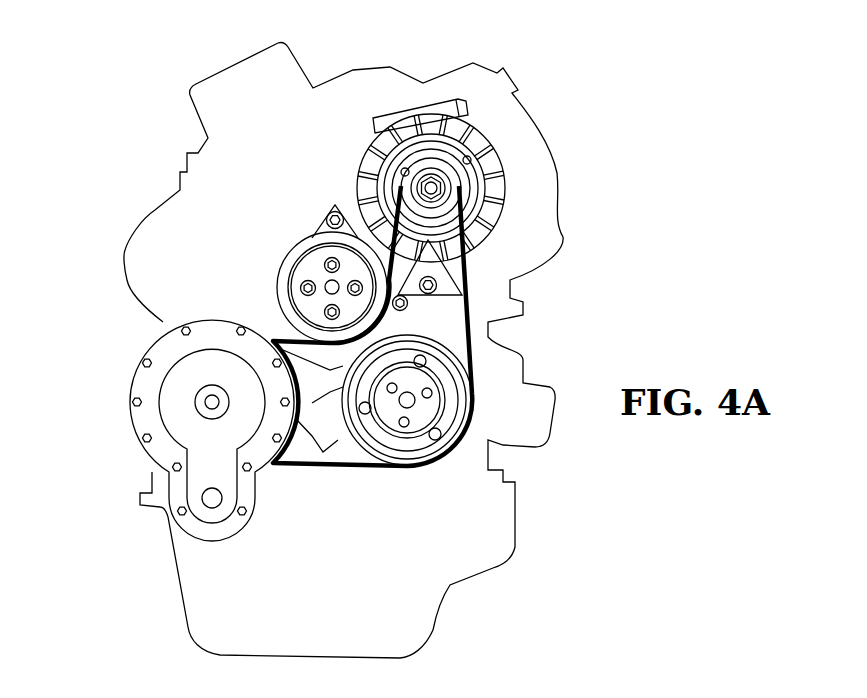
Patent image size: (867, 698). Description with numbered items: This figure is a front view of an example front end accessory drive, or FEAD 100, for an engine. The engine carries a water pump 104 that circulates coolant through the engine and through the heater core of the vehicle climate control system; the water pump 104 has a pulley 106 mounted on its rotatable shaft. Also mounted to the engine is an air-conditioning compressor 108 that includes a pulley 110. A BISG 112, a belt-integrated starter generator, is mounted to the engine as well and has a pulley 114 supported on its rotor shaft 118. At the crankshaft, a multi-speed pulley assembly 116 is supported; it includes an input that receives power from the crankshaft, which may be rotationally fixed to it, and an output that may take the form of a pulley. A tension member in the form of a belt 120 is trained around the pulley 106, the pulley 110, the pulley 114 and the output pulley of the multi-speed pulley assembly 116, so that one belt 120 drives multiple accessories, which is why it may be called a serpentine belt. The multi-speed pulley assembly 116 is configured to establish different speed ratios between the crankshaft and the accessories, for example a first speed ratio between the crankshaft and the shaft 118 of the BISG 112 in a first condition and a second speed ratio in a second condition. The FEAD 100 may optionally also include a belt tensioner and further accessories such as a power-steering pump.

The front end accessory drive (FEAD) 100 is at (280, 80).
The water pump 104 is at (328, 213).
The pulley 106 is at (296, 276).
The air-conditioning compressor 108 is at (455, 432).
The pulley 110 is at (423, 452).
The BISG 112 is at (505, 178).
The pulley 114 is at (430, 187).
The multi-speed pulley assembly 116 is at (145, 382).
The rotor shaft 118 is at (427, 187).
The belt 120 is at (270, 330).